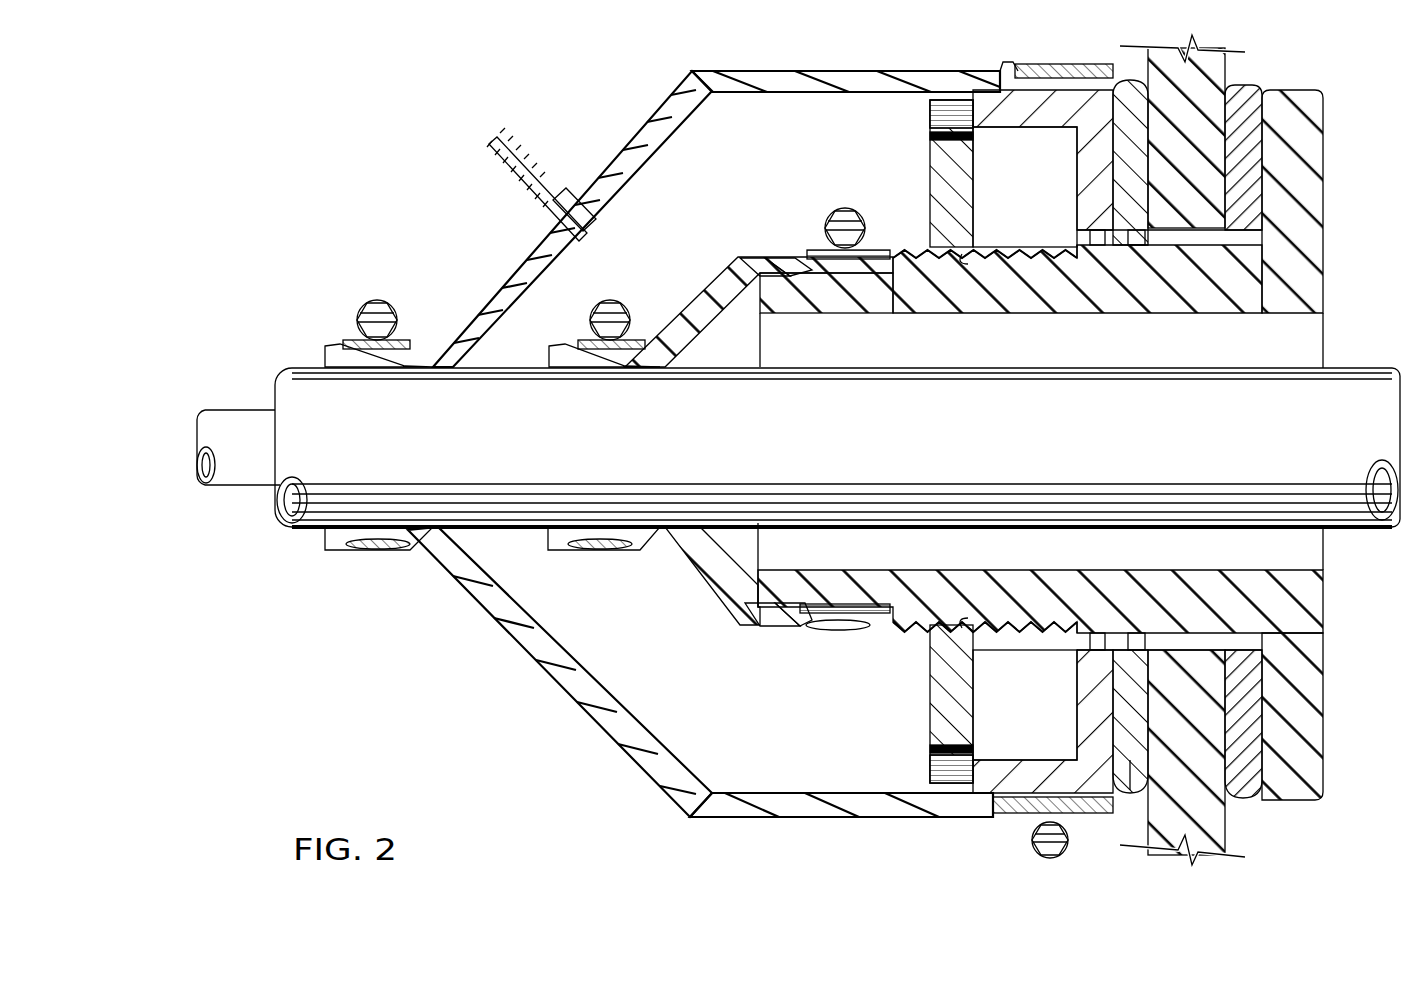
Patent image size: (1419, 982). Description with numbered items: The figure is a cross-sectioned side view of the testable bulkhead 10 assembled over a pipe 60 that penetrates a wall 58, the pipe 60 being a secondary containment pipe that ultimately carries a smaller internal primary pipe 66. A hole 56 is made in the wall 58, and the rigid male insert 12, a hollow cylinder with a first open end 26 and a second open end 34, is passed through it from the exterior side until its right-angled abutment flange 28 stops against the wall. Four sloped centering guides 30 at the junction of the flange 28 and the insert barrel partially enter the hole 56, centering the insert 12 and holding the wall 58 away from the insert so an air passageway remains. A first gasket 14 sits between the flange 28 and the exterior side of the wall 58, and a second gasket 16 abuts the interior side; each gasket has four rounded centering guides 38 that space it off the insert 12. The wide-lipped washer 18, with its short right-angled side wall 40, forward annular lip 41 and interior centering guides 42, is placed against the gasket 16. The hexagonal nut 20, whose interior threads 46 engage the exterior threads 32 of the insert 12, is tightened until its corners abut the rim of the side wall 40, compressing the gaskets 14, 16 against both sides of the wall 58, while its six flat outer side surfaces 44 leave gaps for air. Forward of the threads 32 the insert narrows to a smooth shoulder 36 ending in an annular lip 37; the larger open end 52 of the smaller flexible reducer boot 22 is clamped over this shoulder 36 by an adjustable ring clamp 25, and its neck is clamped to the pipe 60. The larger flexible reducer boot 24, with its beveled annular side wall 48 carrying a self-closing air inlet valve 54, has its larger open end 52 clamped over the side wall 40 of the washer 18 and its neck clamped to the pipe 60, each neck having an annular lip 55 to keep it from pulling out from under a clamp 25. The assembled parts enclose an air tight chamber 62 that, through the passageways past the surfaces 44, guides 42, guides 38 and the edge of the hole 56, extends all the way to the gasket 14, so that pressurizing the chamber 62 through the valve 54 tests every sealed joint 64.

The testable bulkhead 10 is at (343, 209).
The male insert 12 is at (1303, 594).
The gasket 14 is at (1255, 88).
The gasket 16 is at (1130, 772).
The wide-lipped washer 18 is at (1013, 128).
The hexagonal nut 20 is at (930, 170).
The flexible reducer boot 22 is at (706, 287).
The flexible reducer boot 24 is at (520, 648).
The adjustable ring clamp 25 is at (378, 300).
The first open end 26 is at (1307, 336).
The abutment flange 28 is at (1327, 110).
The centering guides 30 is at (1253, 238).
The exterior threads 32 is at (1064, 252).
The second open end 34 is at (755, 540).
The shoulder 36 is at (784, 272).
The annular lip 37 is at (778, 275).
The centering guides 38 is at (1135, 246).
The side wall 40 is at (1000, 796).
The annular lip 41 is at (848, 80).
The centering guides 42 is at (1097, 246).
The flat outer side surfaces 44 is at (930, 113).
The interior threads 46 is at (970, 258).
The annular side wall 48 is at (710, 596).
The larger open end 52 is at (896, 277).
The air inlet valve 54 is at (525, 162).
The annular lip 55 is at (332, 346).
The hole 56 is at (1195, 237).
The wall 58 is at (1232, 66).
The pipe 60 is at (362, 460).
The air tight chamber 62 is at (622, 232).
The sealed joints 64 is at (380, 376).
The internal primary pipe 66 is at (240, 490).